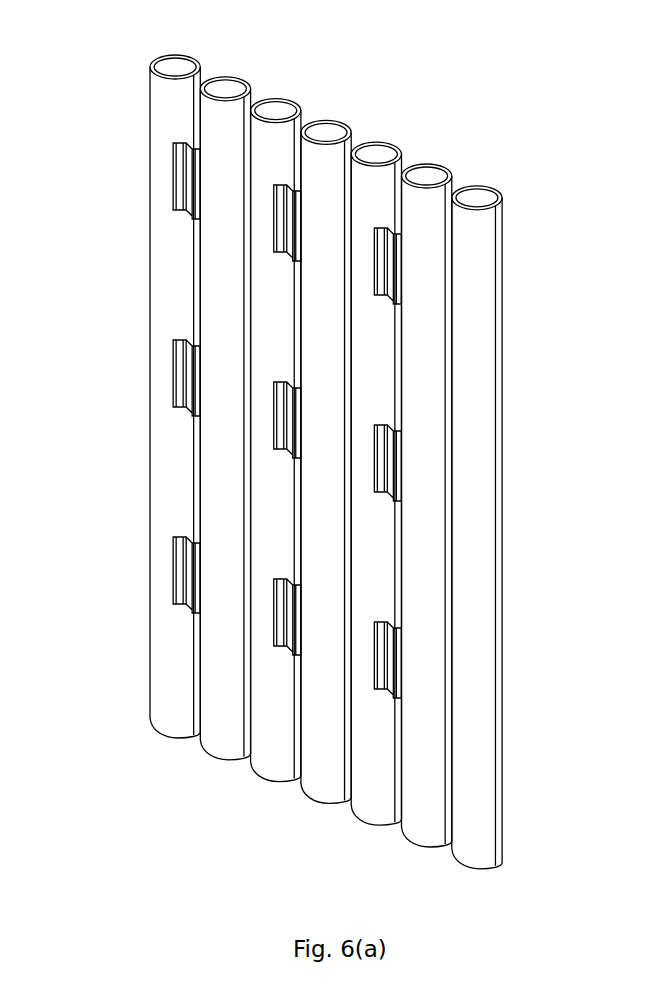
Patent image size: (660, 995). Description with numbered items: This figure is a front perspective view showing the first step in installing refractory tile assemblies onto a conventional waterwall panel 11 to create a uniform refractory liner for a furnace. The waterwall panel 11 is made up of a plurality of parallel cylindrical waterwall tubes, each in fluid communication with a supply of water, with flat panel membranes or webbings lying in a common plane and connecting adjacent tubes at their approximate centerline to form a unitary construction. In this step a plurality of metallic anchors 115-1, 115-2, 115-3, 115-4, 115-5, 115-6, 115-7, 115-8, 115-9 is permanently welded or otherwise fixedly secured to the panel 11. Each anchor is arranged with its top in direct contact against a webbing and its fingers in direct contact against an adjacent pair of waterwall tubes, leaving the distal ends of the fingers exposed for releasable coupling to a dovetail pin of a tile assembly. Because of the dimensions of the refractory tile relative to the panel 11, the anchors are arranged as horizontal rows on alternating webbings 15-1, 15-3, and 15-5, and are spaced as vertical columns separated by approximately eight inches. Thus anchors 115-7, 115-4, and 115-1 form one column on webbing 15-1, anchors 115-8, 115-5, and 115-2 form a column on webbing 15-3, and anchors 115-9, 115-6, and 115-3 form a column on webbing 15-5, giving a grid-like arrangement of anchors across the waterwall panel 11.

The waterwall panel 11 is at (339, 455).
The webbing 15-1 is at (205, 80).
The webbing 15-3 is at (305, 122).
The webbing 15-5 is at (406, 163).
The metallic anchor 115-1 is at (175, 578).
The metallic anchor 115-2 is at (295, 657).
The metallic anchor 115-3 is at (388, 670).
The metallic anchor 115-4 is at (176, 381).
The metallic anchor 115-5 is at (275, 437).
The metallic anchor 115-6 is at (390, 473).
The metallic anchor 115-7 is at (175, 172).
The metallic anchor 115-8 is at (276, 240).
The metallic anchor 115-9 is at (390, 272).